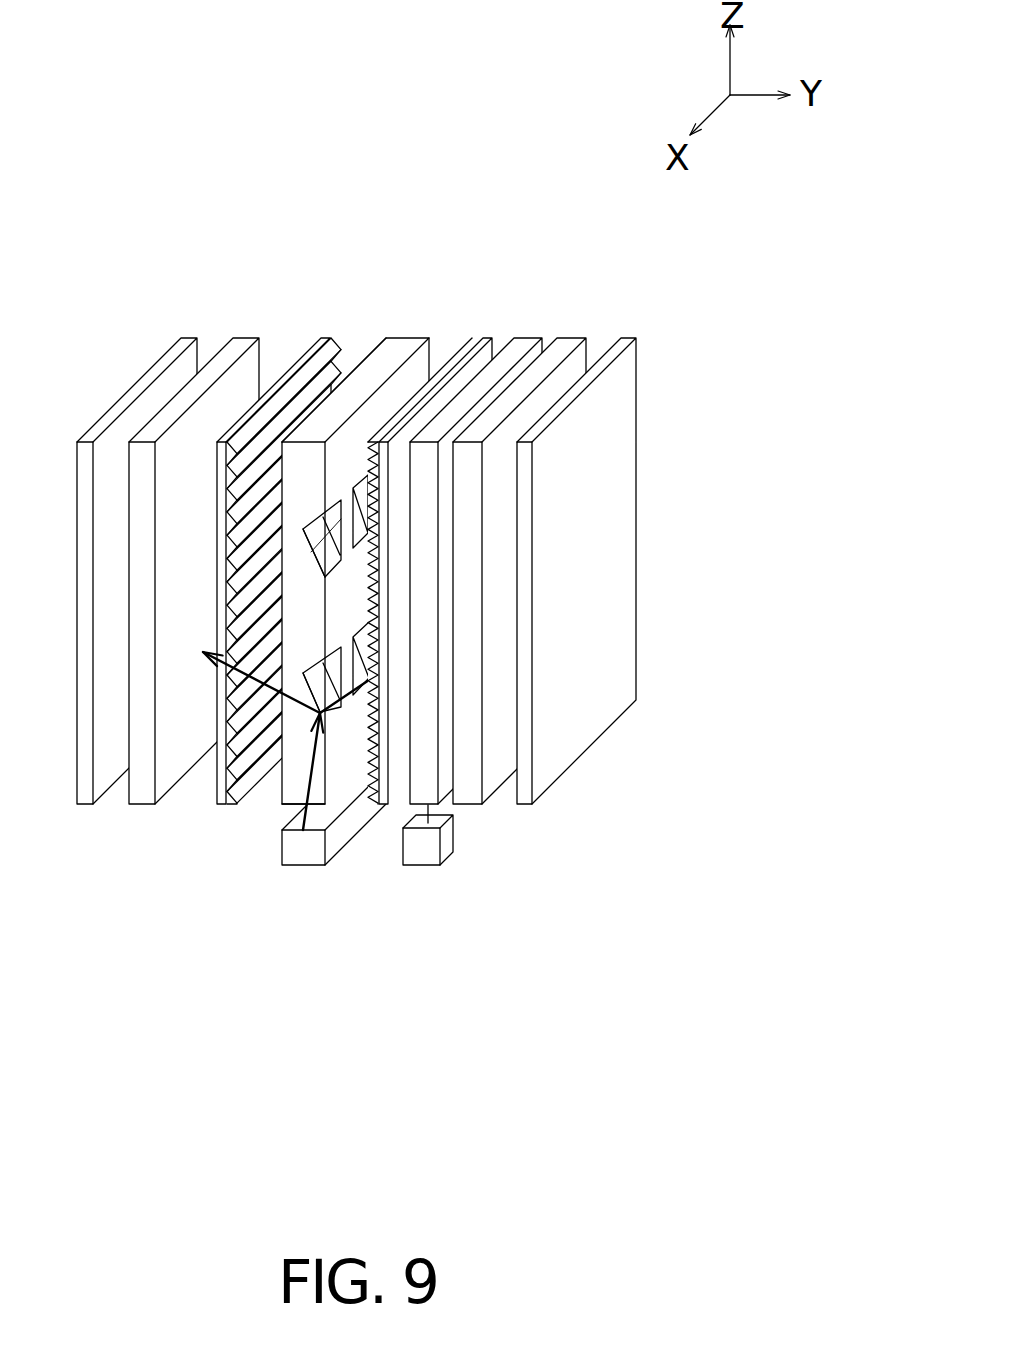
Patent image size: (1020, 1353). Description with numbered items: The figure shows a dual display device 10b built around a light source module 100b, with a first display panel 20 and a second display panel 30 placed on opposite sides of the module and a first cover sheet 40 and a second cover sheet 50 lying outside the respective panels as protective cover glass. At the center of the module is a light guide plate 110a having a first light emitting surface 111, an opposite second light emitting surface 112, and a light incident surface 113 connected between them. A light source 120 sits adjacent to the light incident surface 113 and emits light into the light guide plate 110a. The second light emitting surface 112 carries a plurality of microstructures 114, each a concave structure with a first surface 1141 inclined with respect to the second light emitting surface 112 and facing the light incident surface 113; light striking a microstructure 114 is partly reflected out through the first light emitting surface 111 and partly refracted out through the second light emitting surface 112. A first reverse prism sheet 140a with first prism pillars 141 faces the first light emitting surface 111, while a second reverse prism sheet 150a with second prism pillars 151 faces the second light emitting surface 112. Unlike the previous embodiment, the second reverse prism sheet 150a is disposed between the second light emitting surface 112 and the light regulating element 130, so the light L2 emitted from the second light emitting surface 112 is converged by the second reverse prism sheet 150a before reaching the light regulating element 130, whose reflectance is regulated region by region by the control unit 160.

The dual display device 10b is at (112, 156).
The first display panel 20 is at (240, 345).
The second display panel 30 is at (568, 345).
The first cover sheet 40 is at (188, 345).
The second cover sheet 50 is at (624, 342).
The light source module 100b is at (506, 573).
The light guide plate 110a is at (365, 357).
The first light emitting surface 111 is at (357, 358).
The second light emitting surface 112 is at (423, 358).
The light incident surface 113 is at (292, 806).
The microstructures 114 is at (341, 519).
The first surface 1141 is at (311, 552).
The light source 120 is at (304, 857).
The light regulating element 130 is at (525, 345).
The first reverse prism sheet 140a is at (241, 637).
The first prism pillars 141 is at (245, 798).
The second reverse prism sheet 150a is at (430, 660).
The second prism pillars 151 is at (372, 786).
The control unit 160 is at (446, 842).
The light L2 is at (322, 790).